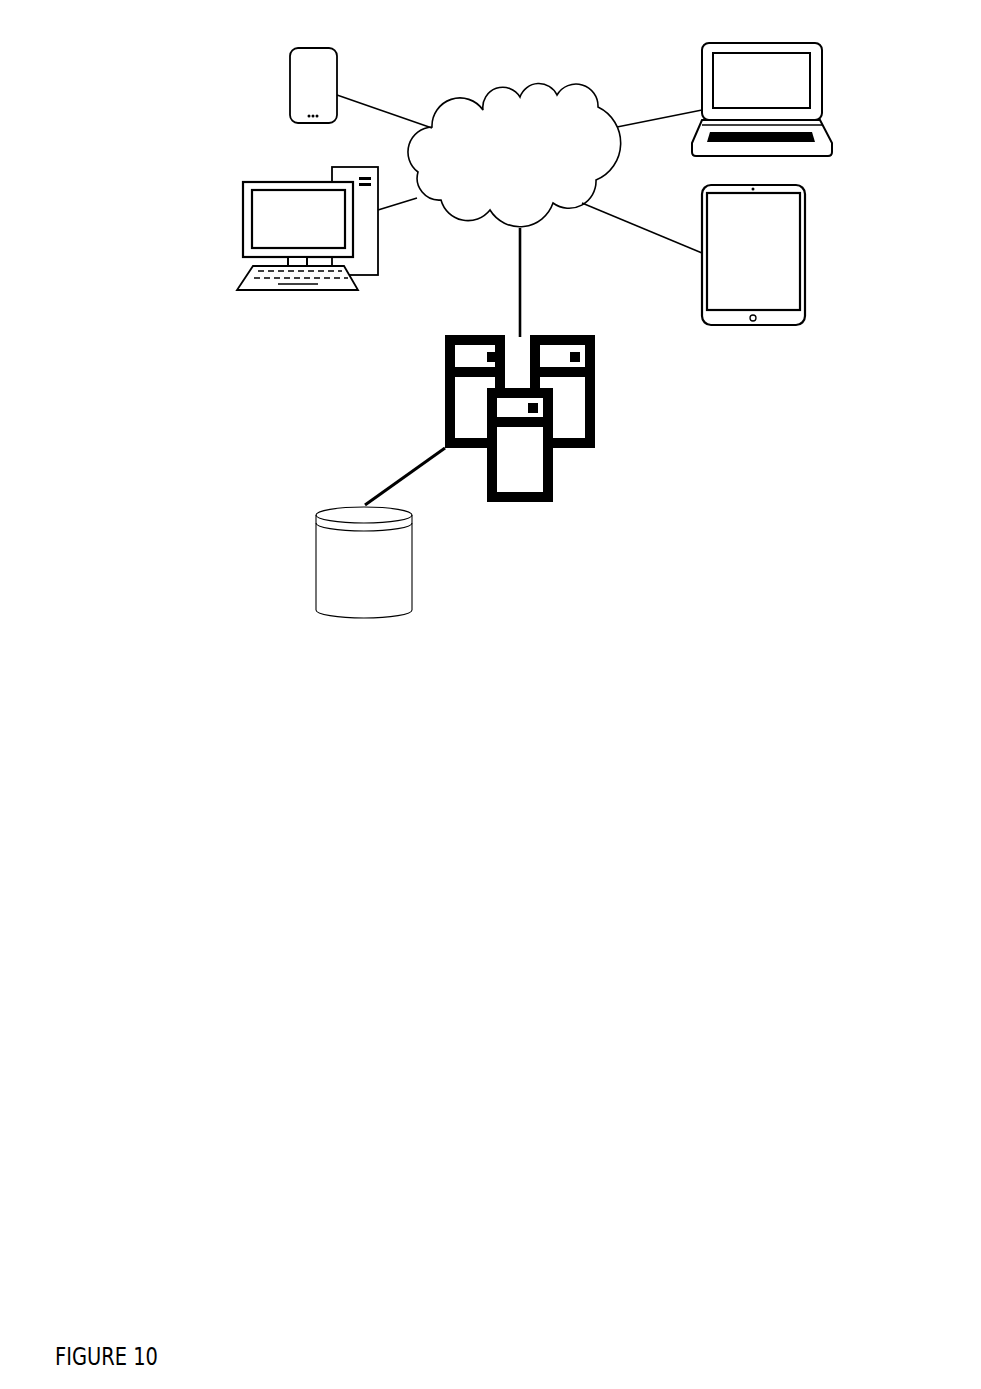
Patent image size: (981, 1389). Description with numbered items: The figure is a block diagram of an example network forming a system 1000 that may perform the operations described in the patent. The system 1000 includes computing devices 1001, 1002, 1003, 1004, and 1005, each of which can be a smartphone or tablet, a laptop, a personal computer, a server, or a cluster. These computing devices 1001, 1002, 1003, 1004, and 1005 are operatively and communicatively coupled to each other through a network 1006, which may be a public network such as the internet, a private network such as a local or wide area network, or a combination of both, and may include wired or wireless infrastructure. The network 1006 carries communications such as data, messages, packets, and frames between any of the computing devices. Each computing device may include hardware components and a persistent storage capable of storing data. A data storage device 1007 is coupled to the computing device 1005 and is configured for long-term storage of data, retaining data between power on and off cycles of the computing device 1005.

The system 1000 is at (124, 53).
The computing device 1001 is at (277, 87).
The computing device 1002 is at (687, 83).
The computing device 1003 is at (222, 238).
The computing device 1004 is at (810, 252).
The computing device 1005 is at (581, 418).
The network 1006 is at (514, 155).
The data storage device 1007 is at (329, 581).